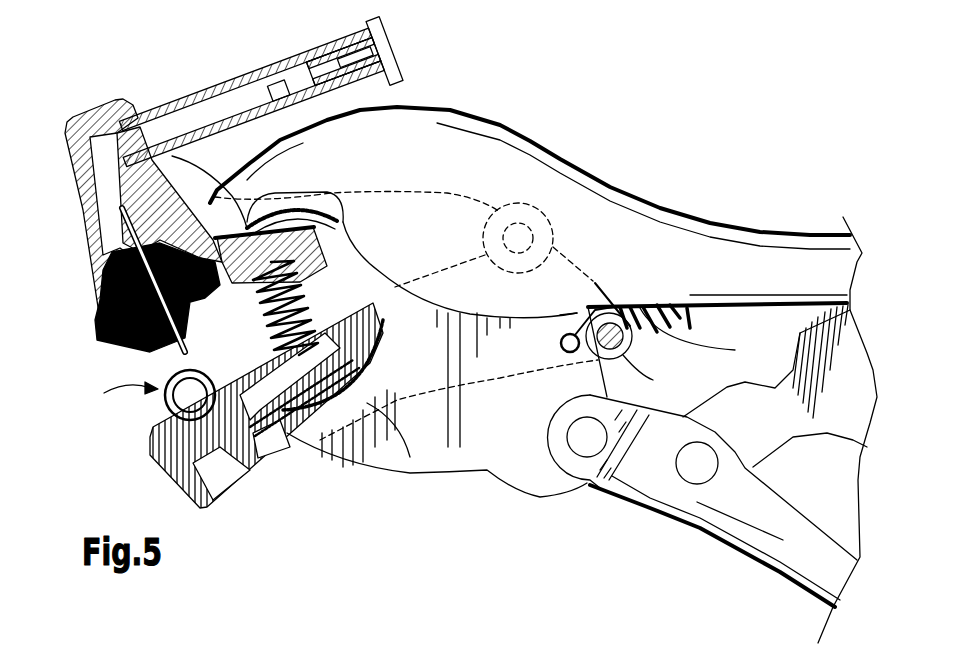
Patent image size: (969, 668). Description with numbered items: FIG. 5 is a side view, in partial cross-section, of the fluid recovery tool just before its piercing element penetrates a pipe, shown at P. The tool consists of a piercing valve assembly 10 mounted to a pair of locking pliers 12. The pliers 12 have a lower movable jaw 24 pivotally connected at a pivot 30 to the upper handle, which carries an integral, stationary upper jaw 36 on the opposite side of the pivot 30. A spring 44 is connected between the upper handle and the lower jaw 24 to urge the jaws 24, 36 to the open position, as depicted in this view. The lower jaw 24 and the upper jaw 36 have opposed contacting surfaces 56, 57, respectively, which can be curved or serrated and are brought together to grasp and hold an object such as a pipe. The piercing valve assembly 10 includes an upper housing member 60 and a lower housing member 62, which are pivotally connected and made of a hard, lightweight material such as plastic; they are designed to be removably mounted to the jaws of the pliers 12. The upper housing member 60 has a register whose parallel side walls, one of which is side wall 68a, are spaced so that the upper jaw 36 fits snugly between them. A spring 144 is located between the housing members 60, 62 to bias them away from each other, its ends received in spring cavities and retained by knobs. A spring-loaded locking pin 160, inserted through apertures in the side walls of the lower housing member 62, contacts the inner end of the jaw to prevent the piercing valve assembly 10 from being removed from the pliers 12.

The piercing valve assembly 10 is at (57, 110).
The pair of pliers 12 is at (705, 172).
The lower movable jaw 24 is at (483, 477).
The pivot 30 is at (518, 240).
The upper jaw 36 is at (467, 123).
The spring 44 is at (670, 317).
The contacting surface 56 is at (370, 403).
The contacting surface 57 is at (303, 200).
The upper housing member 60 is at (75, 232).
The lower housing member 62 is at (152, 437).
The side wall 68a is at (193, 197).
The spring 144 is at (313, 315).
The spring-loaded locking pin 160 is at (627, 363).